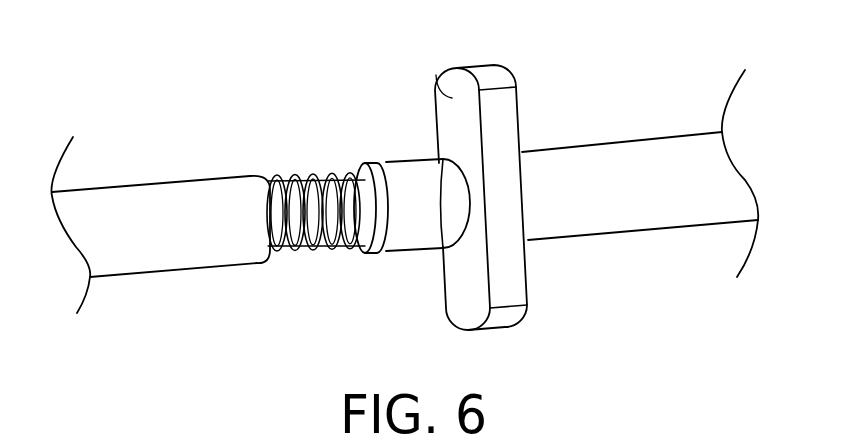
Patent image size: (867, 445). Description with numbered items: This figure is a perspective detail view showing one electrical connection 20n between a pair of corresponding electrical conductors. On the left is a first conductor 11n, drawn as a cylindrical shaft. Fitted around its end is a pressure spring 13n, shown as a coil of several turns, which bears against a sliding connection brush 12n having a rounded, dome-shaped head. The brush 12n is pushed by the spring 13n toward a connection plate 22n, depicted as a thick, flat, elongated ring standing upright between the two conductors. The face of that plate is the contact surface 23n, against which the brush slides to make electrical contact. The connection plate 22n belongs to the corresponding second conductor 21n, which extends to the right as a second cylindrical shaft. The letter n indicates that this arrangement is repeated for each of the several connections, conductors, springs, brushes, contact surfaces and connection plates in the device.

The electrical conductor 11n is at (163, 182).
The sliding connection brush 12n is at (388, 158).
The pressure spring 13n is at (322, 170).
The electrical connection 20n is at (391, 190).
The second conductor 21n is at (617, 142).
The connection plate 22n is at (451, 165).
The contact surface 23n is at (432, 184).